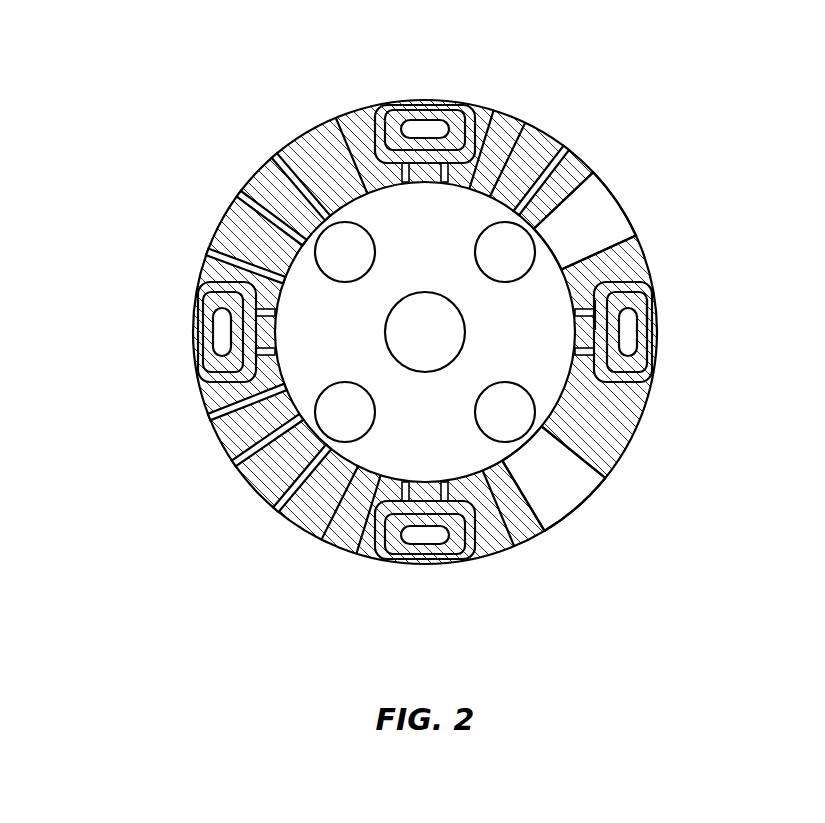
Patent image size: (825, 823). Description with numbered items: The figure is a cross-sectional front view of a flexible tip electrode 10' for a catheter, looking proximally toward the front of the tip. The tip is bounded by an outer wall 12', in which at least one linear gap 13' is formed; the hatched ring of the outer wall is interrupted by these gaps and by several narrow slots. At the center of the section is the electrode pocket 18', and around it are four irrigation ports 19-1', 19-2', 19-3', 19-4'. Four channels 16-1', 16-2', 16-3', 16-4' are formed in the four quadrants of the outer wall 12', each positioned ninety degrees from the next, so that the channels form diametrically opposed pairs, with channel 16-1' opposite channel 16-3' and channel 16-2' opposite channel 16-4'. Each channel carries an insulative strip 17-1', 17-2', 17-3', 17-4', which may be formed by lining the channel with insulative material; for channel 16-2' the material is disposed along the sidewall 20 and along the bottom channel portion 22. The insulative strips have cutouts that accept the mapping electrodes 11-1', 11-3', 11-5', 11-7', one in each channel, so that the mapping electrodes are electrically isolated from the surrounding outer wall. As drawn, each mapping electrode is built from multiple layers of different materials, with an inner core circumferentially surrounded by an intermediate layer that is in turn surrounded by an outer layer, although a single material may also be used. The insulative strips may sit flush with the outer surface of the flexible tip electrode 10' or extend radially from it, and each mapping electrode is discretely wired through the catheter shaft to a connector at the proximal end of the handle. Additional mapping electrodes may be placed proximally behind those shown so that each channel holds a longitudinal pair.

The flexible tip electrode 10' is at (379, 315).
The mapping electrode 11-1' is at (432, 89).
The mapping electrode 11-3' is at (683, 338).
The mapping electrode 11-5' is at (420, 575).
The mapping electrode 11-7' is at (167, 332).
The outer wall 12' is at (449, 332).
The linear gap 13' is at (424, 343).
The channel 16-1' is at (365, 116).
The channel 16-2' is at (671, 368).
The channel 16-3' is at (483, 543).
The channel 16-4' is at (173, 314).
The insulative strip 17-1' is at (404, 86).
The insulative strip 17-2' is at (680, 353).
The insulative strip 17-3' is at (452, 576).
The insulative strip 17-4' is at (167, 346).
The electrode pocket 18' is at (425, 301).
The irrigation port 19-1' is at (251, 235).
The irrigation port 19-2' is at (526, 179).
The irrigation port 19-3' is at (271, 462).
The irrigation port 19-4' is at (578, 462).
The sidewall 20 is at (597, 316).
The bottom channel portion 22 is at (640, 312).